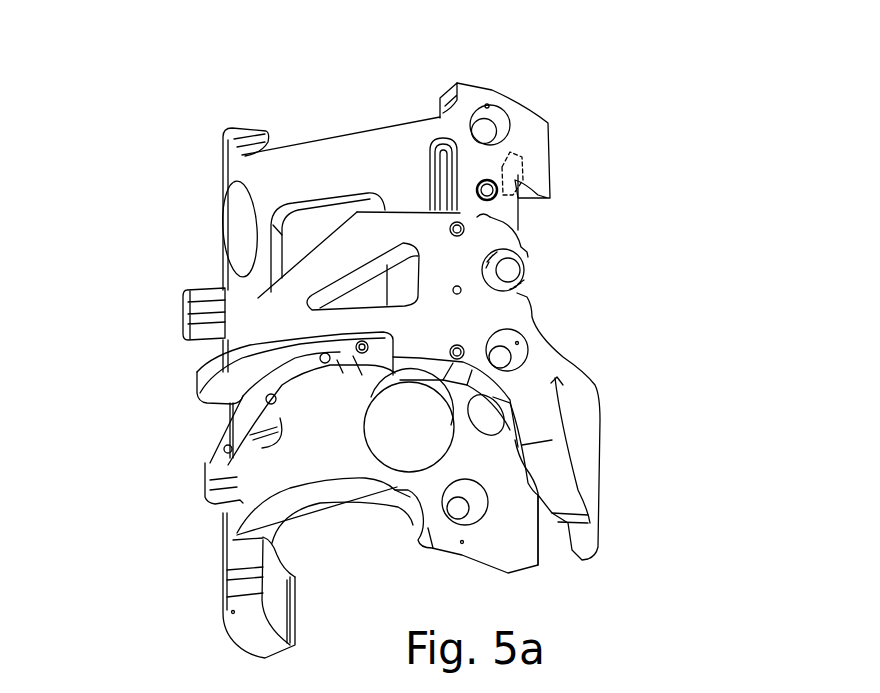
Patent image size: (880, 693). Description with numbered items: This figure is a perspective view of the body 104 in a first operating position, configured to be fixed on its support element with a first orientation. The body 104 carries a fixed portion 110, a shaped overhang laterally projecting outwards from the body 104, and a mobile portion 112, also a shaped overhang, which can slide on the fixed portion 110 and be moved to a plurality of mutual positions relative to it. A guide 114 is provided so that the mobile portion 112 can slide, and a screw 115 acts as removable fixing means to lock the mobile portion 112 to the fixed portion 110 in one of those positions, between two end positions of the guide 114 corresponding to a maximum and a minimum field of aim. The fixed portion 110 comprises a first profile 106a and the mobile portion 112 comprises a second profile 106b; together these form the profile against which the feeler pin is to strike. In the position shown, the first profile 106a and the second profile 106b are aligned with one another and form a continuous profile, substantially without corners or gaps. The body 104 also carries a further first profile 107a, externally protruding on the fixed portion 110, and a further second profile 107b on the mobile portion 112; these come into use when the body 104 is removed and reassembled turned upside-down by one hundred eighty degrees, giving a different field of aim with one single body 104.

The body 104 is at (612, 168).
The first profile 106a is at (280, 420).
The second profile 106b is at (503, 408).
The further first profile 107a is at (200, 289).
The further second profile 107b is at (333, 235).
The fixed portion 110 is at (400, 148).
The mobile portion 112 is at (263, 335).
The guide 114 is at (445, 207).
The screw 115 is at (510, 270).